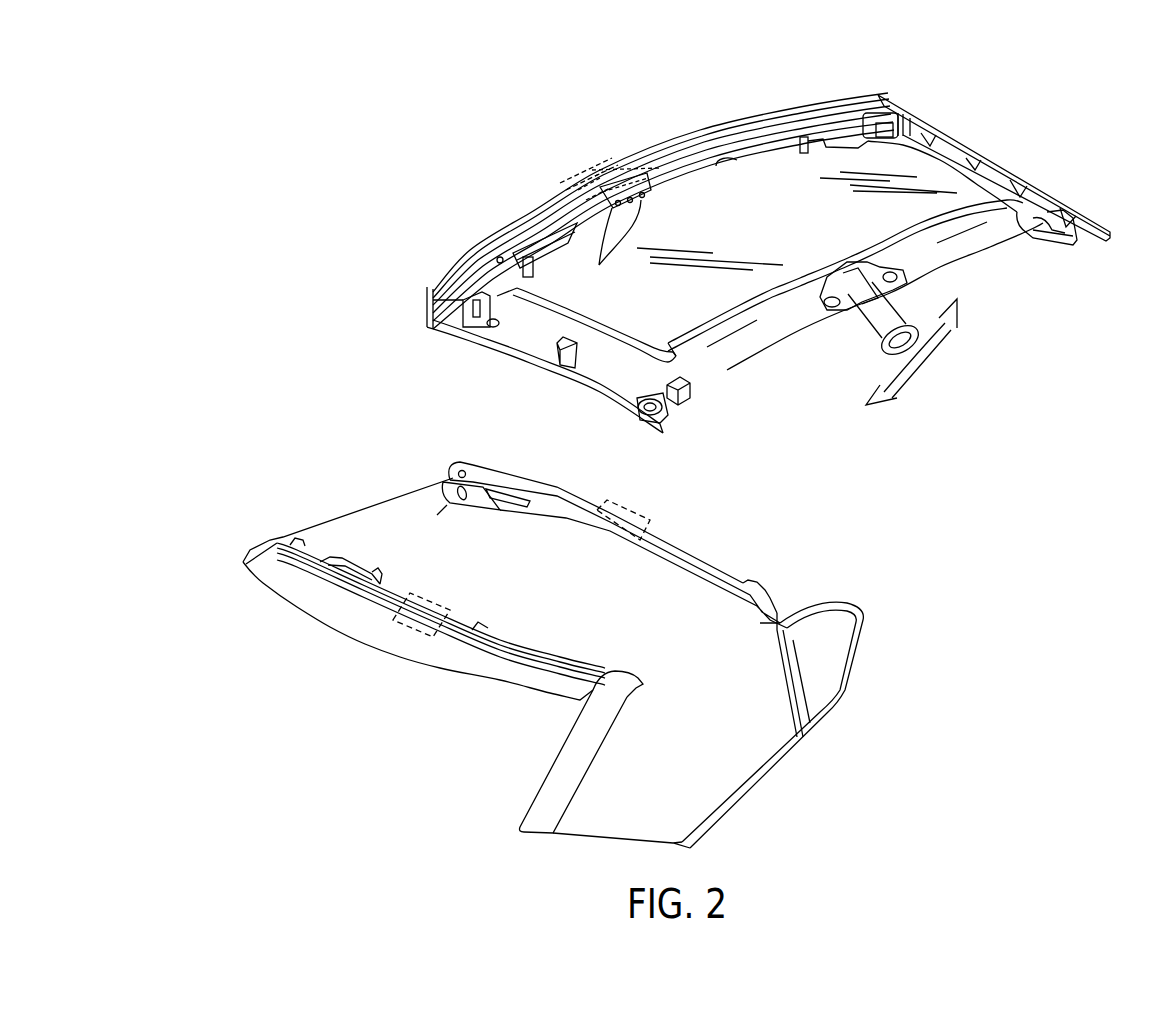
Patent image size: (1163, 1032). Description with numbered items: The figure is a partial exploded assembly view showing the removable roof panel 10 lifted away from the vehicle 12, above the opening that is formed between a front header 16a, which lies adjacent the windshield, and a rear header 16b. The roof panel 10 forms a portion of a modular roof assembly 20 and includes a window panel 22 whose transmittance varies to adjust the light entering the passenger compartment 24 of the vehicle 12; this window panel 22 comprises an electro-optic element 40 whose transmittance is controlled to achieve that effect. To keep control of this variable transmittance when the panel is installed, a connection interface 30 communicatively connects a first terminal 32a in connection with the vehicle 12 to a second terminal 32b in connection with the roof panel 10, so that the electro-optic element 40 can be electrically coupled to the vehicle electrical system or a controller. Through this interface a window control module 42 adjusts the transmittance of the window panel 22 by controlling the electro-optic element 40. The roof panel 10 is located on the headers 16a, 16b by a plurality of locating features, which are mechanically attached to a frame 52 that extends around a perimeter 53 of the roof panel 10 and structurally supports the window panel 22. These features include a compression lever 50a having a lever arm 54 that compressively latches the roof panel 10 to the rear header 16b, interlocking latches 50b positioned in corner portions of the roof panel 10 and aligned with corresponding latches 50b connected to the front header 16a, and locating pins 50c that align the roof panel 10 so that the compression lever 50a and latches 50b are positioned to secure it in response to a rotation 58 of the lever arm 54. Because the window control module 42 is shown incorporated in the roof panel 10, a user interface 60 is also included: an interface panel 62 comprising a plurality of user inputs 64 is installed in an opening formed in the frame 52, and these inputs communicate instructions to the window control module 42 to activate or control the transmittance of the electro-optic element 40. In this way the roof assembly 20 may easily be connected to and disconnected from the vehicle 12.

The roof panel 10 is at (945, 135).
The vehicle 12 is at (260, 455).
The front header 16a is at (297, 540).
The rear header 16b is at (680, 550).
The modular roof assembly 20 is at (436, 221).
The window panel 22 is at (663, 177).
The electro-optic element 40 is at (724, 185).
The passenger compartment 24 is at (702, 609).
The connection interface 30 is at (666, 393).
The first terminal 32a is at (637, 510).
The second terminal 32b is at (613, 163).
The window control module 42 is at (652, 188).
The compression lever 50a is at (846, 328).
The latches 50b is at (888, 125).
The locating pins 50c is at (804, 136).
The frame 52 is at (1030, 212).
The perimeter 53 is at (540, 213).
The lever arm 54 is at (872, 325).
The rotation 58 is at (928, 365).
The user interface 60 is at (616, 128).
The interface panel 62 is at (640, 185).
The user inputs 64 is at (599, 263).